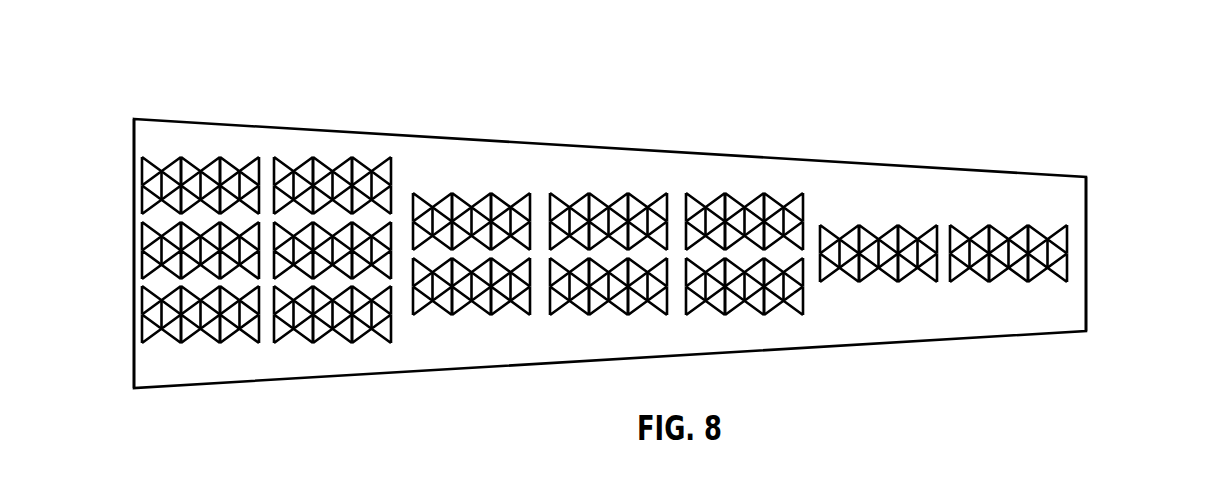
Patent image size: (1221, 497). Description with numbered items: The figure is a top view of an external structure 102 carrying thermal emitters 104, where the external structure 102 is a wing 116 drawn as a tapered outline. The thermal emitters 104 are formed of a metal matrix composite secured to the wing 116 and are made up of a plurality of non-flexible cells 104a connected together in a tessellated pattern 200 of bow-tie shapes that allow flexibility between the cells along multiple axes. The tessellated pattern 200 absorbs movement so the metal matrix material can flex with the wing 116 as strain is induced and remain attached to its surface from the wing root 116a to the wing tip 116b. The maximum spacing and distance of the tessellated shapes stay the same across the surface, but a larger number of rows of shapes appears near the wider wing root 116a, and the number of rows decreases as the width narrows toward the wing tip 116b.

The external structure 102 is at (619, 206).
The thermal emitters 104 is at (673, 170).
The non-flexible cells 104a is at (608, 197).
The wing 116 is at (619, 237).
The wing root 116a is at (133, 178).
The wing tip 116b is at (1088, 225).
The tessellated pattern 200 is at (565, 188).